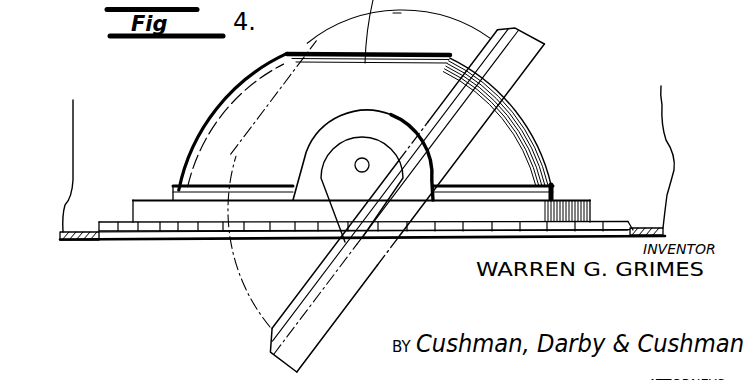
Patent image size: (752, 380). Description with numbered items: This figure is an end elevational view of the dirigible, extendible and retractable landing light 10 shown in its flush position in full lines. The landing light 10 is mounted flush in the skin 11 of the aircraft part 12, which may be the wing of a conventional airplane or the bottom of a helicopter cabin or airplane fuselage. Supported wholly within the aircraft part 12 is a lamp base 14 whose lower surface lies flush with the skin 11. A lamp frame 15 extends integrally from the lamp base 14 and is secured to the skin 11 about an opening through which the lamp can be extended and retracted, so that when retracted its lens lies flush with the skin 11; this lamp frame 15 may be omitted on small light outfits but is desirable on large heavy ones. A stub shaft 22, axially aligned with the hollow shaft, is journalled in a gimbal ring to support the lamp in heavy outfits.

The landing light 10 is at (62, 118).
The skin 11 is at (86, 241).
The aircraft part 12 is at (663, 108).
The lamp base 14 is at (110, 226).
The lamp frame 15 is at (527, 66).
The stub shaft 22 is at (368, 158).